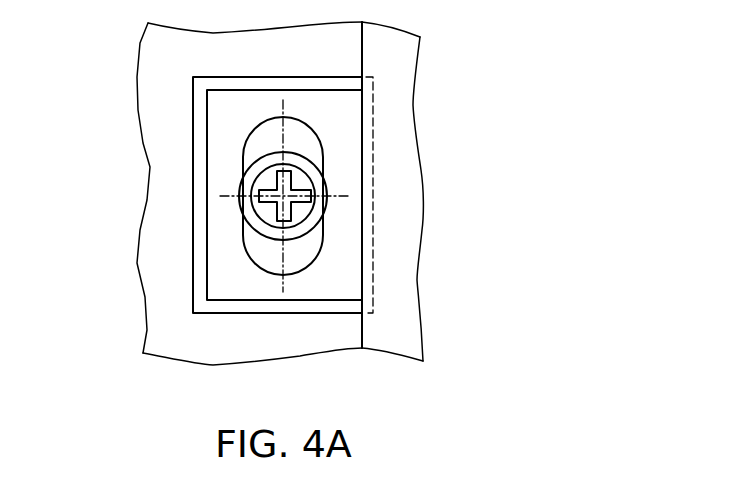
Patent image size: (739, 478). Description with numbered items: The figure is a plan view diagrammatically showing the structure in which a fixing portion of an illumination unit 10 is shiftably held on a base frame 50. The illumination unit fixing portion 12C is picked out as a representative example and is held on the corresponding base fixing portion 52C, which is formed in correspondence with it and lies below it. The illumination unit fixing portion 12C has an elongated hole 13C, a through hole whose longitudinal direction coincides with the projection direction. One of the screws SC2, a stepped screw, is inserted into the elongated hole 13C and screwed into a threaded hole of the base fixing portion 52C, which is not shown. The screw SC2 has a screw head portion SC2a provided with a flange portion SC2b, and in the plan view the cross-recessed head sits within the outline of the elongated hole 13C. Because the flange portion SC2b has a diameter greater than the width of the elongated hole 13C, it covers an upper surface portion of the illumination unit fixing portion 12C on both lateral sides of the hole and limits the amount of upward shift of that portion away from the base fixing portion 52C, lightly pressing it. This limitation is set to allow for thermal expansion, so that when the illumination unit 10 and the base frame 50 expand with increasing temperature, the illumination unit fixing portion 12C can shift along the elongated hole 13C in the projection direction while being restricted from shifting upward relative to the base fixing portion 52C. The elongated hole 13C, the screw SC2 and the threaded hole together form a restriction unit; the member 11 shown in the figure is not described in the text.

The base frame 50 is at (228, 355).
The frame member 11 is at (365, 217).
The illumination unit 10 is at (451, 191).
The base fixing portion 52C is at (327, 313).
The illumination unit fixing portion 12C is at (343, 262).
The elongated hole 13C is at (320, 139).
The screw SC2 is at (410, 196).
The screw head portion SC2a is at (297, 171).
The flange portion SC2b is at (325, 183).